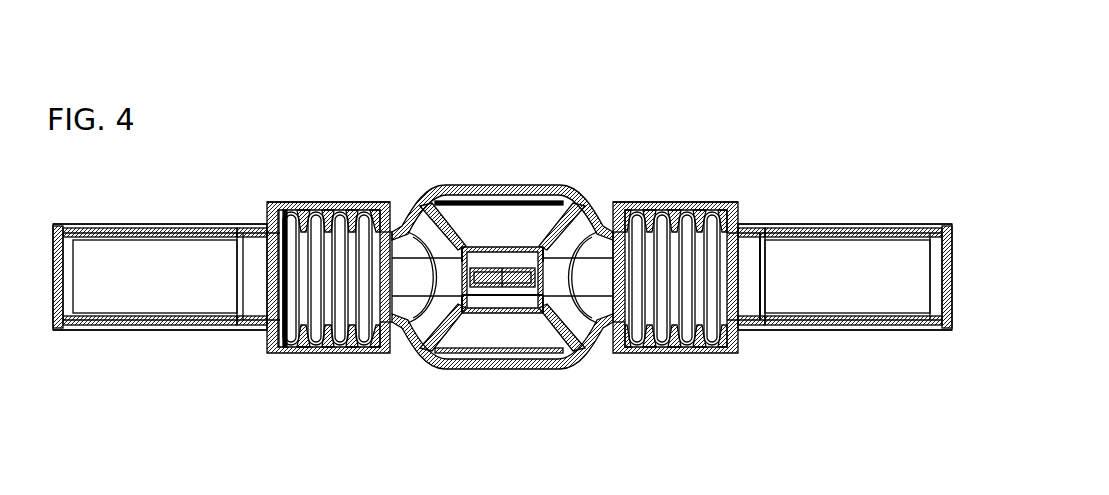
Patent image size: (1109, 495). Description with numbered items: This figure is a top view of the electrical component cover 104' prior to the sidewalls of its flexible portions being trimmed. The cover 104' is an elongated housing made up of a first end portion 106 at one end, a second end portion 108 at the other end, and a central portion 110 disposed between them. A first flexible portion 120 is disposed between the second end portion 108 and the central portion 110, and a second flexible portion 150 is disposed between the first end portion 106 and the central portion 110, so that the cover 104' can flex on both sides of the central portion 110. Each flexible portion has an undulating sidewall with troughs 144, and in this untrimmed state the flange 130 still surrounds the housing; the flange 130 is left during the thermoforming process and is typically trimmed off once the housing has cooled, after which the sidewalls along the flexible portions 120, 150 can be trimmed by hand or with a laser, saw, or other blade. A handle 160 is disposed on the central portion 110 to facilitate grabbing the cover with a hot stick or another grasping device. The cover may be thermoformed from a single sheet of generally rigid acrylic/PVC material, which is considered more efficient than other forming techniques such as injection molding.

The electrical component cover 104' is at (502, 162).
The first end portion 106 is at (157, 268).
The second end portion 108 is at (840, 272).
The central portion 110 is at (495, 220).
The first flexible portion 120 is at (682, 283).
The flange 130 is at (202, 224).
The troughs 144 is at (362, 212).
The second flexible portion 150 is at (330, 205).
The handle 160 is at (507, 281).